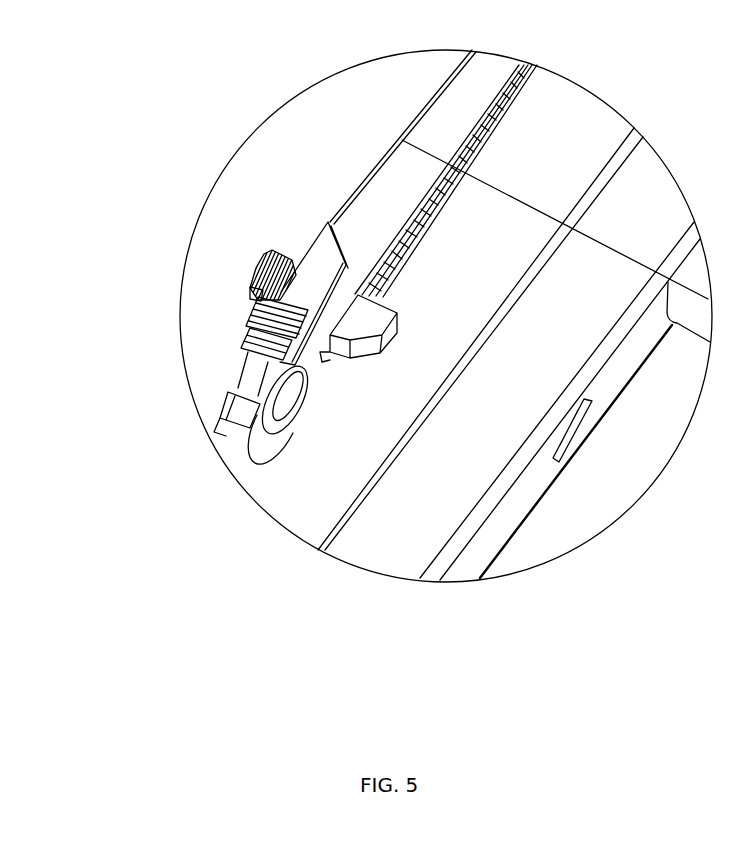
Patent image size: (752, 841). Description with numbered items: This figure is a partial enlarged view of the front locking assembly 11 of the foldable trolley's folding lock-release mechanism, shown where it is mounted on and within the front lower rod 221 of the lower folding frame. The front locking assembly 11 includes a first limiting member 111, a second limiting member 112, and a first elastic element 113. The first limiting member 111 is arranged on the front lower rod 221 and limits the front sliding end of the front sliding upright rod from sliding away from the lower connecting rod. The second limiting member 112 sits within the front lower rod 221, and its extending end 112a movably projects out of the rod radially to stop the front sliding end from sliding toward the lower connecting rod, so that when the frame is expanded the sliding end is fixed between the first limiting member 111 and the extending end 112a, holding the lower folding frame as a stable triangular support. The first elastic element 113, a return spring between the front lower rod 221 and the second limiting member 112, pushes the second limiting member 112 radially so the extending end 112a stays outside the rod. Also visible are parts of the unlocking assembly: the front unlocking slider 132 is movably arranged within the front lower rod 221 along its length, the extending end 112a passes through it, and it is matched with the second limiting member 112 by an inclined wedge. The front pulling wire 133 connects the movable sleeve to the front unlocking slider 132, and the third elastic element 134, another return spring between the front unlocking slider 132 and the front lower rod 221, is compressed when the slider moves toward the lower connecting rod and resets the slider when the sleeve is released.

The front locking assembly 11 is at (83, 163).
The first limiting member 111 is at (402, 140).
The second limiting member 112 is at (313, 277).
The extending end 112a is at (387, 340).
The first elastic element 113 is at (263, 262).
The front unlocking slider 132 is at (270, 428).
The front pulling wire 133 is at (226, 432).
The third elastic element 134 is at (532, 102).
The front lower rod 221 is at (427, 517).